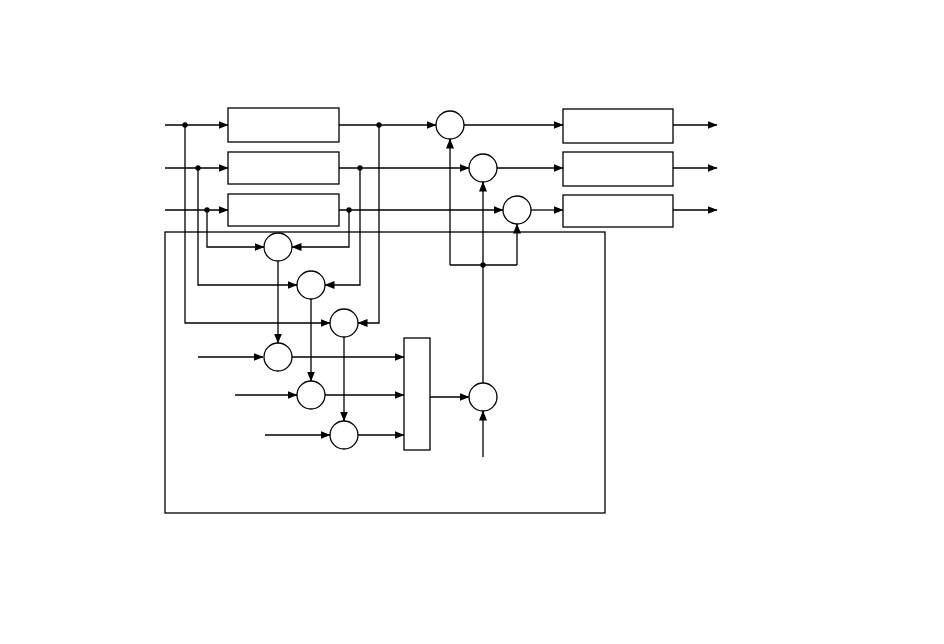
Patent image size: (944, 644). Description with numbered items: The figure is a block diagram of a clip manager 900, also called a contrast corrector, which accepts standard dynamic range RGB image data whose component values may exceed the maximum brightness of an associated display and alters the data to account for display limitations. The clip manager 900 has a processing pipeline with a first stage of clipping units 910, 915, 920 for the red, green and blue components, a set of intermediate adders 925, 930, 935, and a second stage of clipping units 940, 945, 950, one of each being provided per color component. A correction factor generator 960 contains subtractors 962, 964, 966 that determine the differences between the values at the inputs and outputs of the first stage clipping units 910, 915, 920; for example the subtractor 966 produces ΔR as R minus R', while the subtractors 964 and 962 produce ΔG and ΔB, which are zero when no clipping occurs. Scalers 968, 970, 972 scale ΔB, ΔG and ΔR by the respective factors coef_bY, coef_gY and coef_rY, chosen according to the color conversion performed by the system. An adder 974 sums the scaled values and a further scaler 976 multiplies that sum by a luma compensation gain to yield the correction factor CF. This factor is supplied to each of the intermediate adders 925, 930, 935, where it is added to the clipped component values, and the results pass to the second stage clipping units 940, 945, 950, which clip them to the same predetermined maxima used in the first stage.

The clip manager 900 is at (445, 322).
The first stage clipping unit 910 is at (341, 108).
The first stage clipping unit 915 is at (341, 152).
The first stage clipping unit 920 is at (341, 194).
The intermediate adder 925 is at (461, 115).
The intermediate adder 930 is at (488, 156).
The intermediate adder 935 is at (524, 222).
The second stage clipping unit 940 is at (650, 108).
The second stage clipping unit 945 is at (534, 192).
The second stage clipping unit 950 is at (651, 228).
The correction factor generator 960 is at (385, 372).
The subtractor 962 is at (266, 259).
The subtractor 964 is at (311, 271).
The subtractor 966 is at (355, 315).
The scaler 968 is at (267, 349).
The scaler 970 is at (300, 386).
The scaler 972 is at (334, 426).
The adder 974 is at (420, 337).
The scaler 976 is at (496, 392).